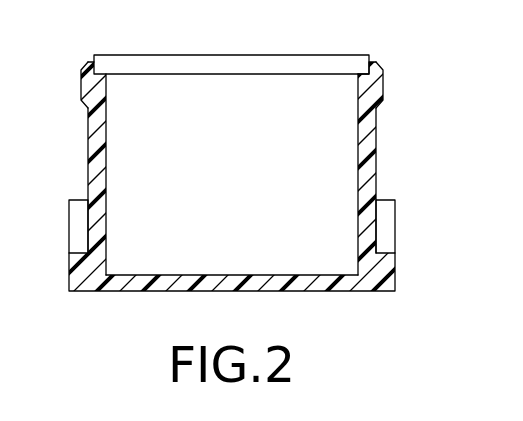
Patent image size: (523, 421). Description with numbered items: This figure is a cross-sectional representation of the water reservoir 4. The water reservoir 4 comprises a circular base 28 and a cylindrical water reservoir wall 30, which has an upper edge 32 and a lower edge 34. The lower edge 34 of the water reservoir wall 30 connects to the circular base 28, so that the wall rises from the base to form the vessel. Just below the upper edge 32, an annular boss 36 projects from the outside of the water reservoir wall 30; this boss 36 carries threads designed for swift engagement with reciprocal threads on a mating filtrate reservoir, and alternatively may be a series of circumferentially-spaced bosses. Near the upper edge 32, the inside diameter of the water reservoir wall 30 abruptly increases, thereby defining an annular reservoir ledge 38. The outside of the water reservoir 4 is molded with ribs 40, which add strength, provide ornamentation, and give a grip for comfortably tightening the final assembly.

The water reservoir 4 is at (77, 156).
The circular base 28 is at (163, 293).
The water reservoir wall 30 is at (378, 150).
The upper edge 32 is at (361, 71).
The lower edge 34 is at (339, 263).
The annular boss 36 is at (79, 88).
The reservoir ledge 38 is at (308, 73).
The ribs 40 is at (398, 212).